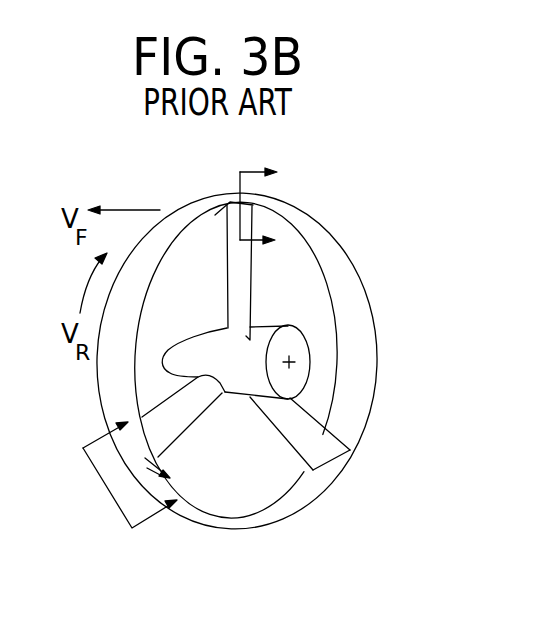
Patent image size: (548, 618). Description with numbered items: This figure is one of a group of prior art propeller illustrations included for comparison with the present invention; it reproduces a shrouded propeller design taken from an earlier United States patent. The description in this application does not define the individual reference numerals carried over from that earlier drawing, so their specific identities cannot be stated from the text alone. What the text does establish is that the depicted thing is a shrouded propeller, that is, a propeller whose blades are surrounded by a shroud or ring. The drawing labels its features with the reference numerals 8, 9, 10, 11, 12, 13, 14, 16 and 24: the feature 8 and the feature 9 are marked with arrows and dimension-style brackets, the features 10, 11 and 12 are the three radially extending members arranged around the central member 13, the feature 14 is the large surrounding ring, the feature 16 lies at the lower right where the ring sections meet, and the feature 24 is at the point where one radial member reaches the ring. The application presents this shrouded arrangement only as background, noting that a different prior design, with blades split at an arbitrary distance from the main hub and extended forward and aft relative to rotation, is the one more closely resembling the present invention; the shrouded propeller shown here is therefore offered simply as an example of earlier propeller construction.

The flow direction arrows 8 is at (266, 209).
The ring width 9 is at (127, 483).
The propeller blade 10 is at (251, 277).
The propeller blade 11 is at (285, 440).
The propeller blade 12 is at (190, 428).
The hub 13 is at (263, 325).
The ring 14 is at (341, 247).
The ring inner surface 16 is at (328, 468).
The blade tip 24 is at (349, 451).